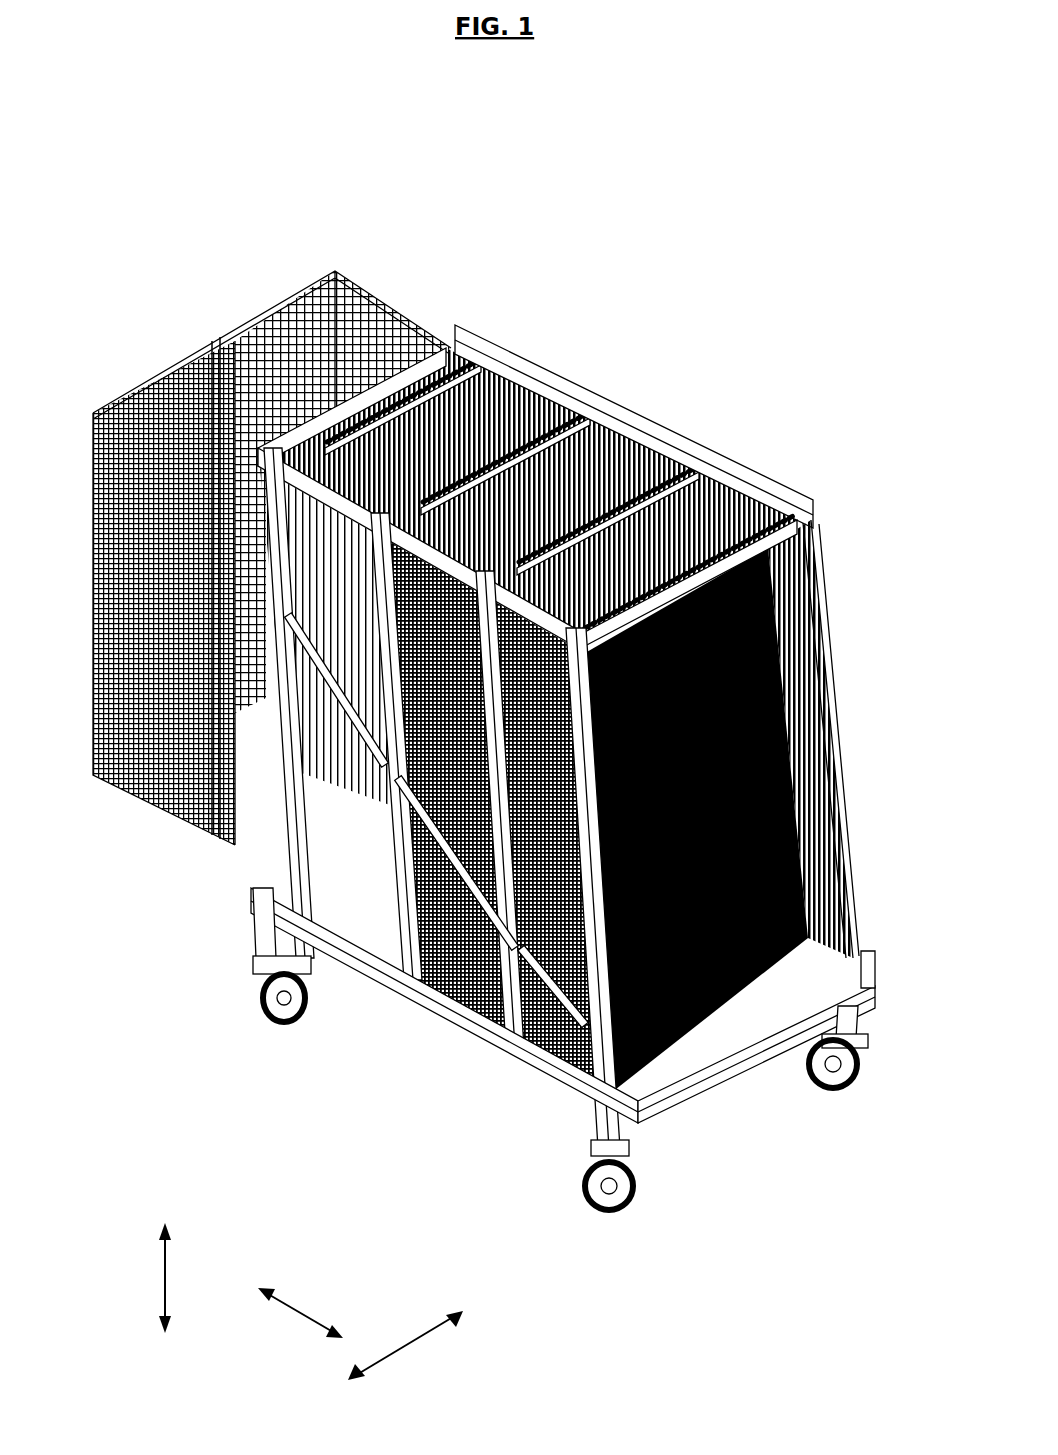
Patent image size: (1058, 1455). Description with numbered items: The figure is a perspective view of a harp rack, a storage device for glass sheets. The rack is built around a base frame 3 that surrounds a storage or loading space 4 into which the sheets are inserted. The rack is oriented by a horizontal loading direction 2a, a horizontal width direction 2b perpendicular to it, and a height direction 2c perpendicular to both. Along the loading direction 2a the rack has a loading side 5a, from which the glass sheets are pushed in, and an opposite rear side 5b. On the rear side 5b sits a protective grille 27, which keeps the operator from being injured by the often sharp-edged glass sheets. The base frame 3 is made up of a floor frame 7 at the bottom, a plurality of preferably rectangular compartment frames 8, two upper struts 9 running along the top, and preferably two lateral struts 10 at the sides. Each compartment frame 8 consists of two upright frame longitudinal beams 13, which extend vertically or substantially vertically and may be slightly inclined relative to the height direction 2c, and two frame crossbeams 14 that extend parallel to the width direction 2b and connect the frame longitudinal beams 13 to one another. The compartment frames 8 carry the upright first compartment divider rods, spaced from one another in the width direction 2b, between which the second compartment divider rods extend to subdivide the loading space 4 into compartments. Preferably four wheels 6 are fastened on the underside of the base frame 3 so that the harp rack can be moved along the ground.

The loading direction 2a is at (300, 1313).
The width direction 2b is at (405, 1345).
The height direction 2c is at (179, 1278).
The base frame 3 is at (537, 357).
The storage or loading space 4 is at (435, 826).
The loading side 5a is at (850, 600).
The rear side 5b is at (170, 322).
The wheels 6 is at (616, 1200).
The floor frame 7 is at (412, 990).
The compartment frames 8 is at (652, 473).
The upper struts 9 is at (605, 392).
The lateral struts 10 is at (437, 822).
The frame longitudinal beams 13 is at (273, 690).
The frame crossbeams 14 is at (438, 347).
The protective grille 27 is at (260, 483).